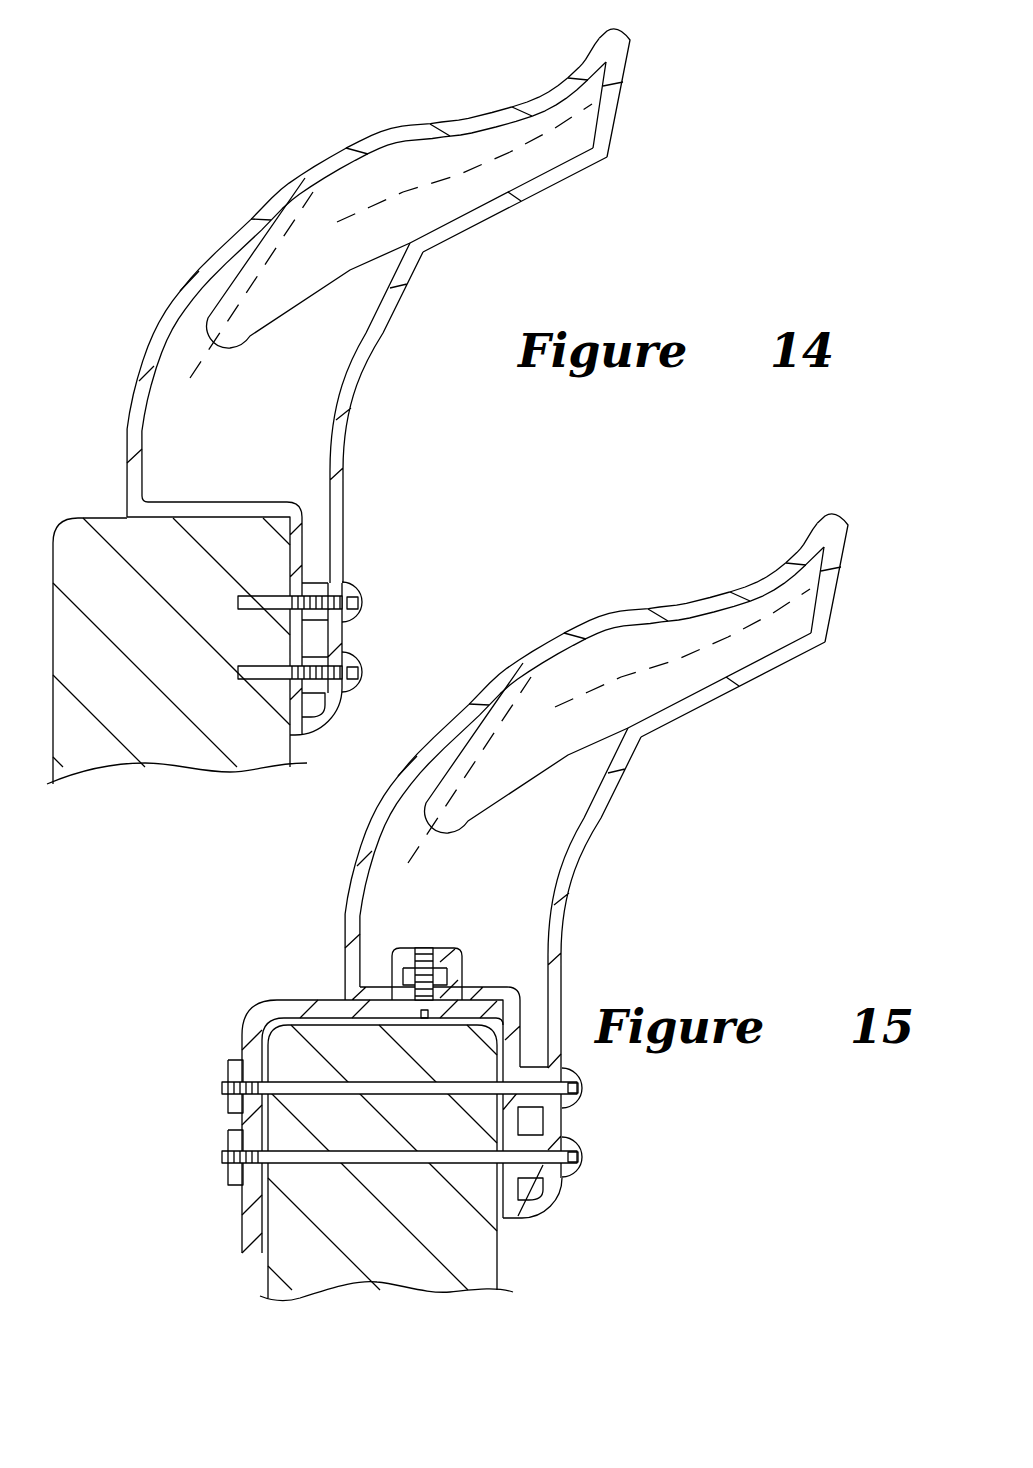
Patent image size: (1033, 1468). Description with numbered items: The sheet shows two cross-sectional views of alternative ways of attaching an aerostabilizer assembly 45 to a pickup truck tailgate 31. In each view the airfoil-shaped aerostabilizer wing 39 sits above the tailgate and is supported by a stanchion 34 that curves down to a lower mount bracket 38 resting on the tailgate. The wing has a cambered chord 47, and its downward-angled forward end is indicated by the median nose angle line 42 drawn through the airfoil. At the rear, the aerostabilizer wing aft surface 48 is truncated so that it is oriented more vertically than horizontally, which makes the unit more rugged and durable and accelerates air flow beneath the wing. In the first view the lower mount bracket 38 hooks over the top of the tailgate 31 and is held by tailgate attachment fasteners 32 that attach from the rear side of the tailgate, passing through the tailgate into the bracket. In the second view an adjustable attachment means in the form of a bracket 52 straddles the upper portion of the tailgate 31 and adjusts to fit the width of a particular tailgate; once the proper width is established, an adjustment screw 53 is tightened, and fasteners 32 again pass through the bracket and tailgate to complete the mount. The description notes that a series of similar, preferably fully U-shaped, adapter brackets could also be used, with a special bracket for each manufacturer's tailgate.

In FIG. 14, the tailgate 31 is at (78, 517).
In FIG. 15, the tailgate 31 is at (500, 1261).
In FIG. 14, the tailgate attachment fasteners 32 is at (362, 672).
In FIG. 15, the tailgate attachment fasteners 32 is at (582, 1157).
In FIG. 14, the stanchions 34 is at (383, 333).
In FIG. 15, the stanchions 34 is at (597, 837).
In FIG. 14, the lower mount brackets 38 is at (343, 485).
In FIG. 15, the lower mount brackets 38 is at (563, 960).
In FIG. 14, the aerostabilizer wing 39 is at (378, 132).
In FIG. 15, the aerostabilizer wing 39 is at (593, 620).
In FIG. 14, the median nose angle line 42 is at (184, 388).
In FIG. 15, the median nose angle line 42 is at (417, 855).
In FIG. 14, the aerostabilizer assembly 45 is at (513, 206).
In FIG. 15, the aerostabilizer assembly 45 is at (727, 697).
In FIG. 14, the chord 47 is at (338, 262).
In FIG. 15, the chord 47 is at (548, 742).
In FIG. 14, the aerostabilizer wing aft surface 48 is at (613, 135).
In FIG. 15, the aerostabilizer wing aft surface 48 is at (832, 618).
In FIG. 15, the bracket 52 is at (270, 999).
In FIG. 15, the adjustment screw 53 is at (443, 947).